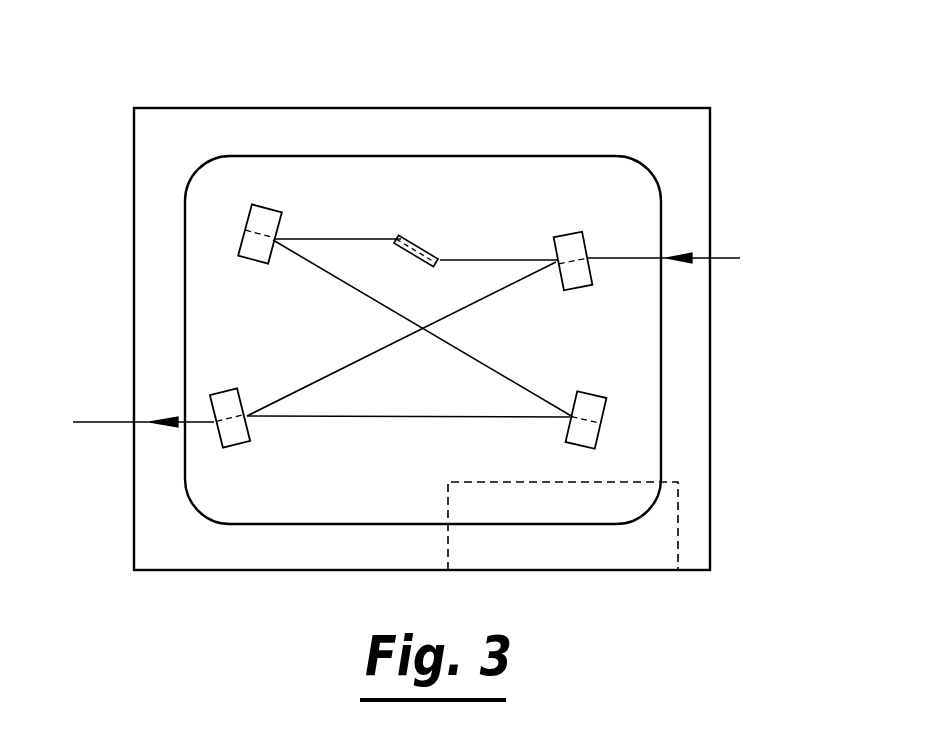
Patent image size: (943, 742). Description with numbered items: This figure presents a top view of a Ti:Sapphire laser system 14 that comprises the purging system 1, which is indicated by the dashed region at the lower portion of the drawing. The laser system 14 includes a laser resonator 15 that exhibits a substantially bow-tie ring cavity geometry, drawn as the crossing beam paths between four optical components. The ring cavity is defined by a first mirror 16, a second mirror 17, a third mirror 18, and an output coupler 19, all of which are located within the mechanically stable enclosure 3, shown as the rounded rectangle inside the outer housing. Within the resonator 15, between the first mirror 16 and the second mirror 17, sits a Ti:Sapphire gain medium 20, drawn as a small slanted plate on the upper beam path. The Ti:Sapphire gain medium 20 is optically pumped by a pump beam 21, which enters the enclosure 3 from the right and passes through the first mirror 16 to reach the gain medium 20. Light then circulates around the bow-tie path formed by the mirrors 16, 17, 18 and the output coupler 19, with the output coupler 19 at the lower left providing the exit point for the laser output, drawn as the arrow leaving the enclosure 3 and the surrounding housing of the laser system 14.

The purging system 1 is at (563, 526).
The mechanically stable enclosure 3 is at (213, 133).
The Ti:Sapphire laser system 14 is at (775, 97).
The laser resonator 15 is at (292, 321).
The first mirror 16 is at (568, 232).
The second mirror 17 is at (272, 204).
The third mirror 18 is at (593, 392).
The output coupler 19 is at (235, 445).
The Ti:Sapphire gain medium 20 is at (417, 238).
The pump beam 21 is at (720, 258).